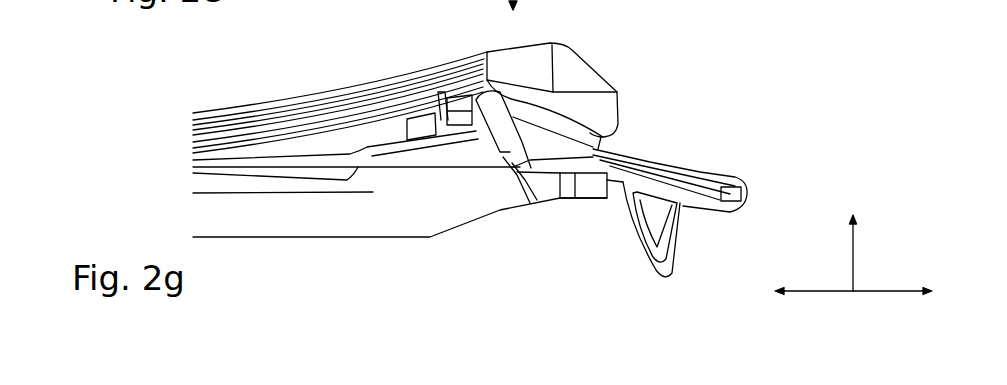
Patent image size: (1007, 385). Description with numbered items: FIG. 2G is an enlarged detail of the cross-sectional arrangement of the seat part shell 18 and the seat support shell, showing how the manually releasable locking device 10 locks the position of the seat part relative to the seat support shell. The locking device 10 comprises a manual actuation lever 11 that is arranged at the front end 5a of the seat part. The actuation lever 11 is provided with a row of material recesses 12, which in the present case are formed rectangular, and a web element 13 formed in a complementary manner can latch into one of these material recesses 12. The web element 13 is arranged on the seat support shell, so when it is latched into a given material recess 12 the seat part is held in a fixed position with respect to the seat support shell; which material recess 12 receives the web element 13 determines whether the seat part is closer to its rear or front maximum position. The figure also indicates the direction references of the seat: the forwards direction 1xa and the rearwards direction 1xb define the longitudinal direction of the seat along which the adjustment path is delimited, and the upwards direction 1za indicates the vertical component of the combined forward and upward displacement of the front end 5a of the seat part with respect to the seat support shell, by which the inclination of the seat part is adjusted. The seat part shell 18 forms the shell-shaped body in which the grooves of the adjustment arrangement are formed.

The front end 5a is at (706, 126).
The locking device 10 is at (605, 286).
The actuation lever 11 is at (750, 183).
The material recesses 12 is at (423, 53).
The web element 13 is at (443, 120).
The seat part shell 18 is at (580, 67).
The forwards direction 1xa is at (903, 290).
The rearwards direction 1xb is at (793, 290).
The upwards direction 1za is at (851, 232).